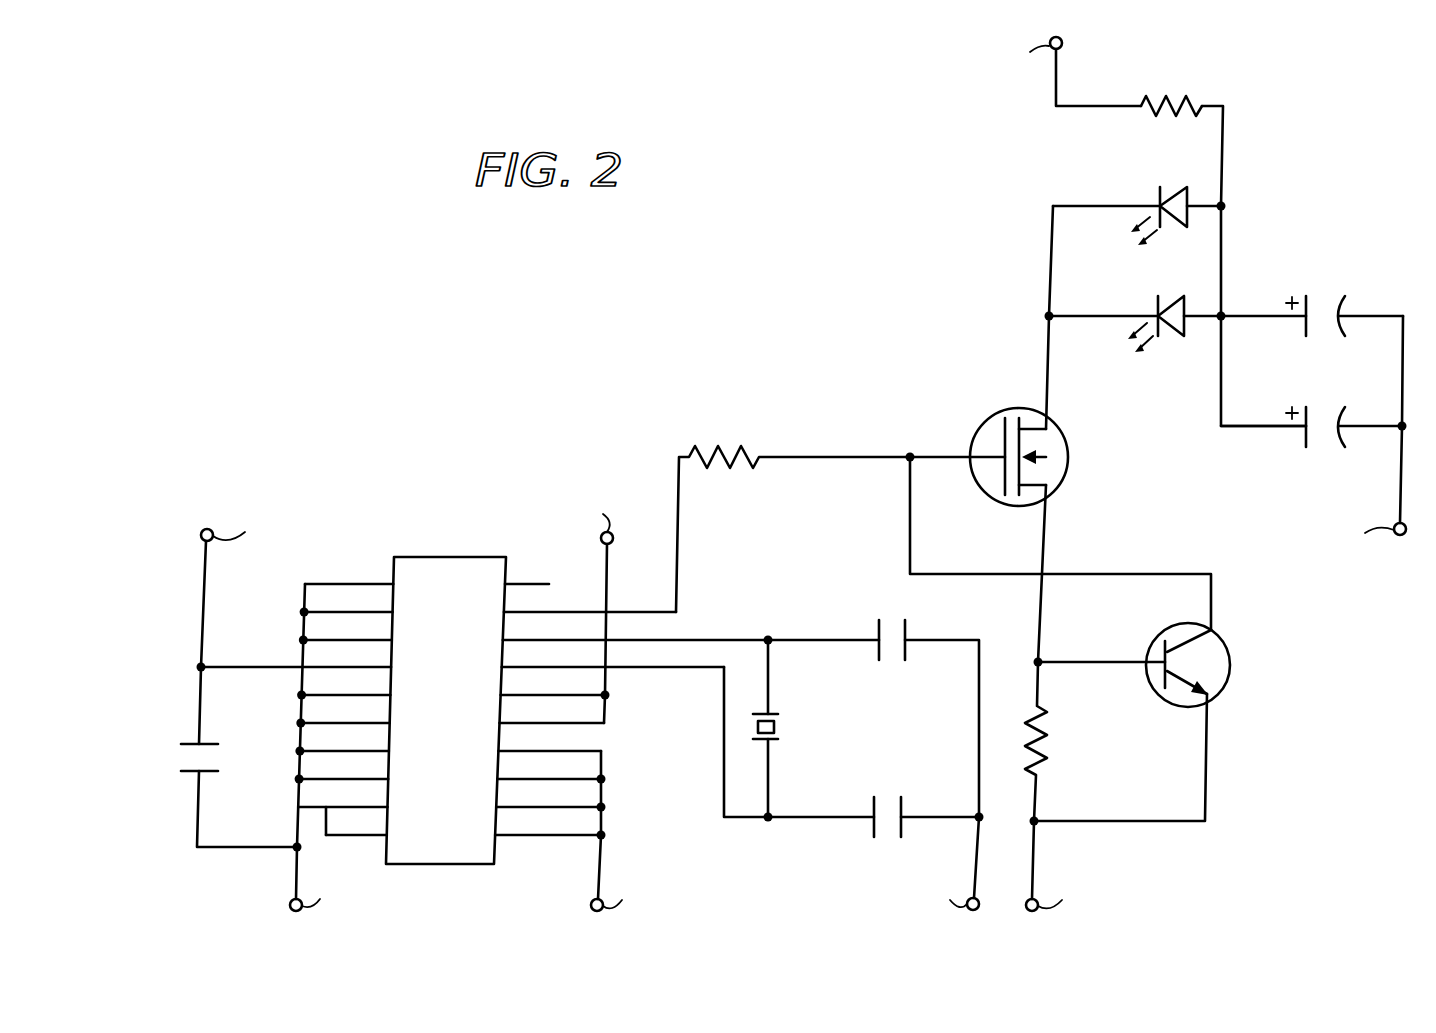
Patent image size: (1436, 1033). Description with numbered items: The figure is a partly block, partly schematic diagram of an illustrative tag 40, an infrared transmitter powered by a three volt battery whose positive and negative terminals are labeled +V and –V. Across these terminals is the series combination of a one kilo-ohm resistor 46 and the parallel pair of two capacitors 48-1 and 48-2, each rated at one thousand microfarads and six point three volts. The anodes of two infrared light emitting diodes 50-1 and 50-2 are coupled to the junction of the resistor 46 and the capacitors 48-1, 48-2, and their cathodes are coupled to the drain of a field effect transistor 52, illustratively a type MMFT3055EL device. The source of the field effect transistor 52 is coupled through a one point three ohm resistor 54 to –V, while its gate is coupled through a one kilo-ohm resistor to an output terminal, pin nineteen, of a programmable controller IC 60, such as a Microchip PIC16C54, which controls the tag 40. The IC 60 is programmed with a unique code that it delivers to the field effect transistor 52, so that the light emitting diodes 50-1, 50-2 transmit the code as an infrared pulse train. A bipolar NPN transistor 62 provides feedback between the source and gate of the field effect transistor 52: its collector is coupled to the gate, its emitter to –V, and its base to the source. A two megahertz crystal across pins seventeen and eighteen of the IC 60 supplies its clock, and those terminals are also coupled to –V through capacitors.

The tag 40 is at (846, 283).
The resistor 46 is at (1190, 103).
The capacitor 48-1 is at (1322, 438).
The capacitor 48-2 is at (1323, 300).
The IR light emitting diode 50-1 is at (1176, 297).
The IR light emitting diode 50-2 is at (1177, 188).
The field effect transistor 52 is at (992, 418).
The resistor 54 is at (1048, 752).
The programmable controller IC 60 is at (451, 557).
The bipolar transistor 62 is at (1231, 672).